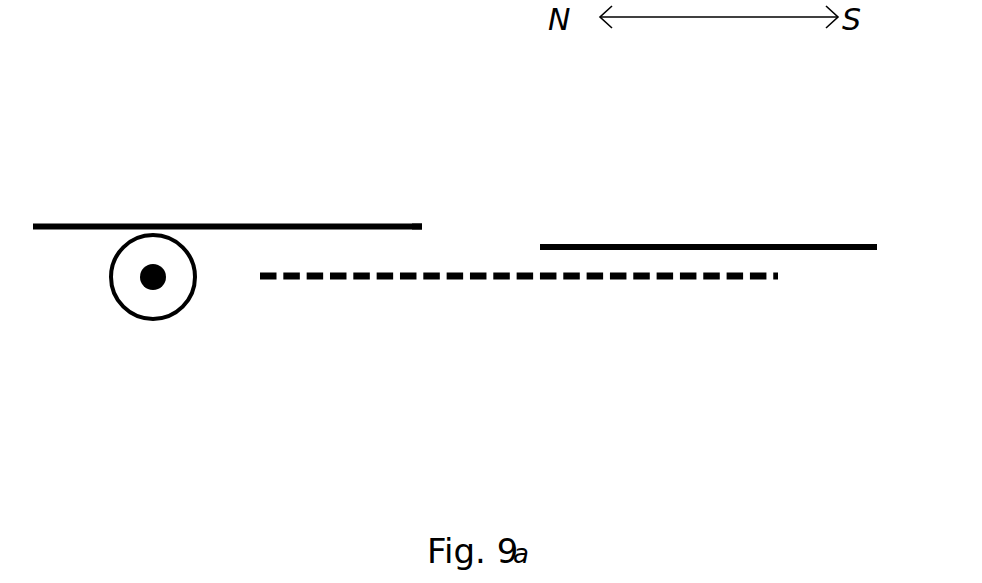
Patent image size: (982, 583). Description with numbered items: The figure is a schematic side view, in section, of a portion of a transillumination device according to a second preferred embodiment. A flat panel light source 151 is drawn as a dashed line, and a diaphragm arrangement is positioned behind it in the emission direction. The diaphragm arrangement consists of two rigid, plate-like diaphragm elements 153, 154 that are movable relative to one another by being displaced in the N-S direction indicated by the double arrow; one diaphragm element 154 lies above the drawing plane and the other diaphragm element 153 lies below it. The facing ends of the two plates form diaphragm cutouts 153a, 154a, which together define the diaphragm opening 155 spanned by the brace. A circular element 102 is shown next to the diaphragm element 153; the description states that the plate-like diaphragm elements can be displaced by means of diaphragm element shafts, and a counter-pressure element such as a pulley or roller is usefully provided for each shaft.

The rotating shaft / magnet element 102 is at (172, 291).
The flat panel light source 151 is at (385, 282).
The diaphragm element 153 is at (330, 222).
The diaphragm cutout 153a is at (452, 228).
The diaphragm element 154 is at (733, 223).
The diaphragm cutout 154a is at (523, 234).
The diaphragm opening 155 is at (570, 176).